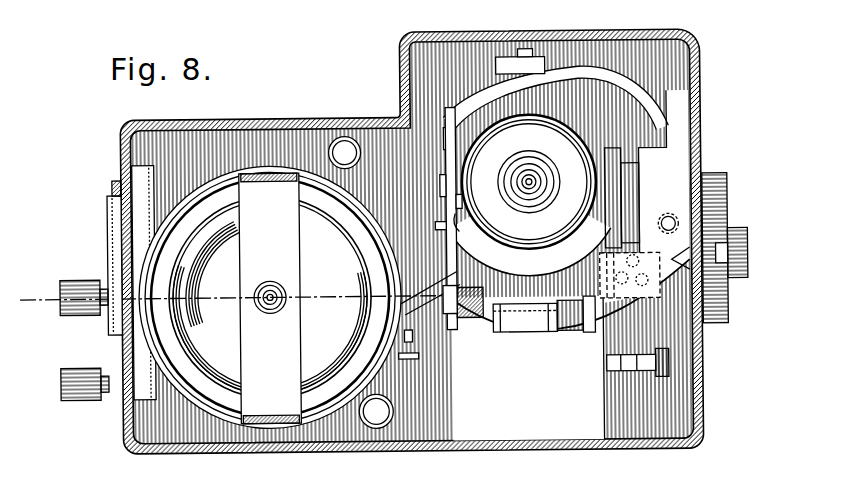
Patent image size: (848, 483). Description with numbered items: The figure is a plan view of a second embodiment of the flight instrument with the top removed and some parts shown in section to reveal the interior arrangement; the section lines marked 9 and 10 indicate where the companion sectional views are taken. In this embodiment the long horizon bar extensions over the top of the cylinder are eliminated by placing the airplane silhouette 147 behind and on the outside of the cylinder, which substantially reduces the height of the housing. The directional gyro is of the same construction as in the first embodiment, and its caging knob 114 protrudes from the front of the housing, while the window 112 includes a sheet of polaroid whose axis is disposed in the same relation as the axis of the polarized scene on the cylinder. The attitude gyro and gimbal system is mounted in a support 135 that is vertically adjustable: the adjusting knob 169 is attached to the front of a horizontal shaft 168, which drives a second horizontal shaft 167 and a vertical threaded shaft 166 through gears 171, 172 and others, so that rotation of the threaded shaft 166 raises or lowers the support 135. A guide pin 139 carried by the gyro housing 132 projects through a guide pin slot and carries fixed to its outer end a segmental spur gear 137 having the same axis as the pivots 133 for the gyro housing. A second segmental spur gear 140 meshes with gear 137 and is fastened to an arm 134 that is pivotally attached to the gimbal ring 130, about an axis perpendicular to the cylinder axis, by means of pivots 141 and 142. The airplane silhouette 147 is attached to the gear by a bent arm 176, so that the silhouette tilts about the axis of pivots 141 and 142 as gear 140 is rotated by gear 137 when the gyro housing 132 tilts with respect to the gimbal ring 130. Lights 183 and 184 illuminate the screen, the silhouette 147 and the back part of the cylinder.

The section line 9- 9 is at (60, 294).
The section line 10- 10 is at (397, 21).
The window 112 is at (108, 222).
The caging knob 114 is at (72, 278).
The gimbal ring 130 is at (561, 292).
The gyro housing 132 is at (548, 250).
The pivots 133 is at (466, 184).
The arm 134 is at (440, 262).
The support 135 is at (590, 75).
The segmental spur gear 137 is at (447, 185).
The guide pin 139 is at (459, 222).
The second segmental spur gear 140 is at (450, 305).
The pivot 141 is at (466, 320).
The pivot 142 is at (490, 333).
The airplane silhouette 147 is at (404, 337).
The vertical threaded shaft 166 is at (668, 216).
The second horizontal shaft 167 is at (670, 303).
The horizontal shaft 168 is at (400, 357).
The adjusting knob 169 is at (66, 368).
The gear 171 is at (660, 374).
The gear 172 is at (662, 360).
The bent arm 176 is at (440, 253).
The light 183 is at (344, 153).
The light 184 is at (376, 411).